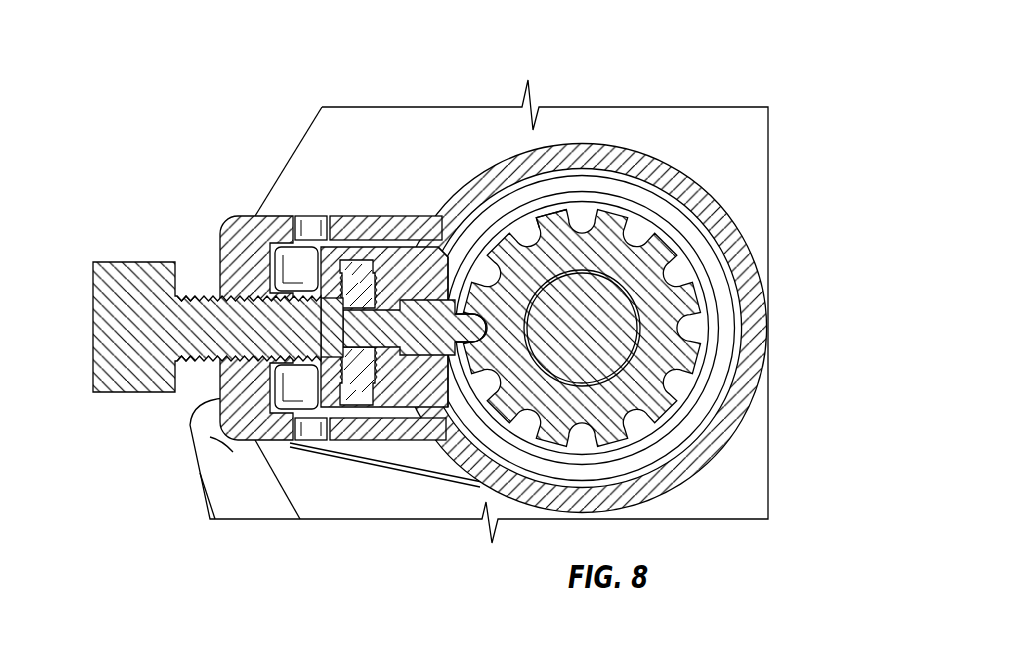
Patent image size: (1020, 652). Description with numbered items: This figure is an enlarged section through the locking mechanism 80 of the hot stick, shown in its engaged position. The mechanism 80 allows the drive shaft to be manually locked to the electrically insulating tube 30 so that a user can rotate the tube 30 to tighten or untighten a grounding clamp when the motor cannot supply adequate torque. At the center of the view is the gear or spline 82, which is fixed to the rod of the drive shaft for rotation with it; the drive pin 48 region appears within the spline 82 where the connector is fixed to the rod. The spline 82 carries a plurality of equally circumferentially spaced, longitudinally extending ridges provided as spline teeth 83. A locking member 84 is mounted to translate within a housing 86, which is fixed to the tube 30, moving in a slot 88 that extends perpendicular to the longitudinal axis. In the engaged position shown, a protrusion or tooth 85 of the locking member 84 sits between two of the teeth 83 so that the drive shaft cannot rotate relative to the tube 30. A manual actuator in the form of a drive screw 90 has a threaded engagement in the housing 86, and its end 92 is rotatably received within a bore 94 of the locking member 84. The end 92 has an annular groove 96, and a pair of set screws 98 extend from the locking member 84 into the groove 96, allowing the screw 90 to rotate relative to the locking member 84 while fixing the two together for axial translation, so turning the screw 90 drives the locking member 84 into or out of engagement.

The electrically insulating tube 30 is at (733, 315).
The drive pin 48 is at (600, 355).
The locking mechanism 80 is at (243, 157).
The gear or spline 82 is at (620, 250).
The ridges or spline teeth 83 is at (553, 212).
The locking member 84 is at (405, 250).
The protrusion or tooth 85 is at (487, 316).
The housing 86 is at (218, 372).
The slot 88 is at (293, 400).
The drive screw 90 is at (123, 258).
The end of drive screw 92 is at (399, 345).
The bore 94 is at (442, 250).
The annular groove 96 is at (320, 298).
The set screws 98 is at (343, 265).